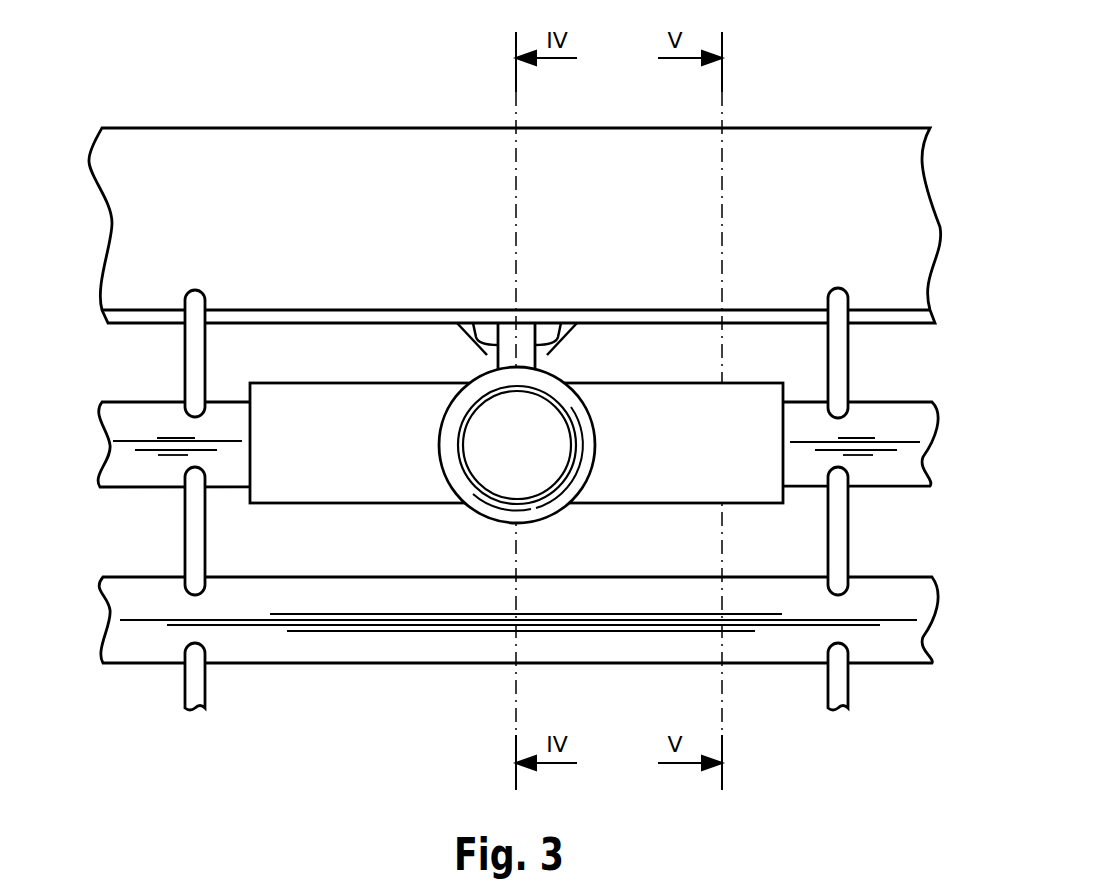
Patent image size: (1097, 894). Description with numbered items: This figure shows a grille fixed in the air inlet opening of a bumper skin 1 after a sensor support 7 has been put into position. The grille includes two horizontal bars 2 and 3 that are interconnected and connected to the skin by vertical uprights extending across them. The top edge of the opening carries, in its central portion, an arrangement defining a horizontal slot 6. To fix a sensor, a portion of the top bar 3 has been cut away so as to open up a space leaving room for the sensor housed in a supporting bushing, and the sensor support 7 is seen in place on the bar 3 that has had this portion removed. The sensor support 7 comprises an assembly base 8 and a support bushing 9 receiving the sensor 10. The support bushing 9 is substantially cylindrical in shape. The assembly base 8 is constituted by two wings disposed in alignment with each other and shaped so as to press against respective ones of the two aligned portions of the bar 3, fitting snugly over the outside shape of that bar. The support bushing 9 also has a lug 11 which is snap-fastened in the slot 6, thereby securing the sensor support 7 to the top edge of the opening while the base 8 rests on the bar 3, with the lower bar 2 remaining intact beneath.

The bumper skin 1 is at (803, 104).
The bar 2 is at (343, 643).
The top bar 3 is at (893, 463).
The horizontal slot 6 is at (552, 334).
The sensor support 7 is at (516, 437).
The assembly base 8 is at (366, 390).
The support bushing 9 is at (452, 447).
The sensor 10 is at (539, 447).
The lug 11 is at (512, 345).